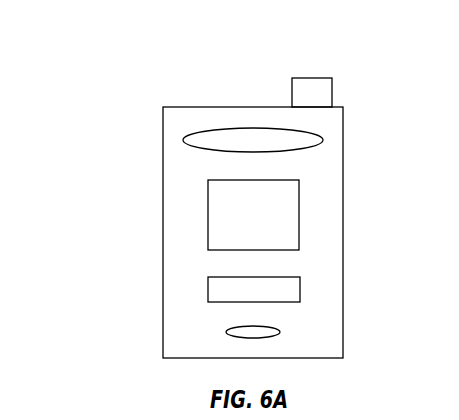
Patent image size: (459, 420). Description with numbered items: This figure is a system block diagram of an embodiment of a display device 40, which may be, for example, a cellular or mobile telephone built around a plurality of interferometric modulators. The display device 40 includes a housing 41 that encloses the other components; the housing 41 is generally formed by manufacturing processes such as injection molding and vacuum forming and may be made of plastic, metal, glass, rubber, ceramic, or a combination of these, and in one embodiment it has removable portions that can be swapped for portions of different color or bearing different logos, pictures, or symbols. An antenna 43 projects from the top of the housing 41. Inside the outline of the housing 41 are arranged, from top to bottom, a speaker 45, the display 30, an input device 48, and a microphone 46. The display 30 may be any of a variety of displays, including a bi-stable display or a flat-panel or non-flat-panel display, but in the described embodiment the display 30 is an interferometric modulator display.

The display device 40 is at (128, 42).
The housing 41 is at (184, 107).
The antenna 43 is at (317, 78).
The speaker 45 is at (322, 139).
The display 30 is at (299, 207).
The input device 48 is at (300, 288).
The microphone 46 is at (280, 332).